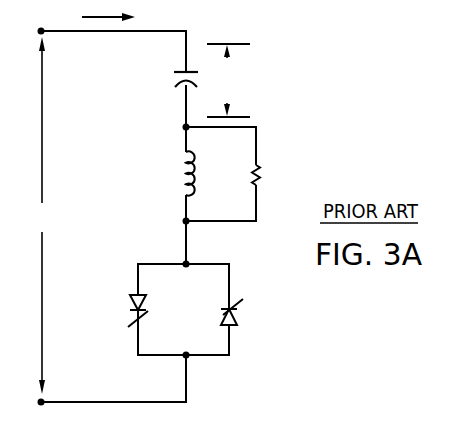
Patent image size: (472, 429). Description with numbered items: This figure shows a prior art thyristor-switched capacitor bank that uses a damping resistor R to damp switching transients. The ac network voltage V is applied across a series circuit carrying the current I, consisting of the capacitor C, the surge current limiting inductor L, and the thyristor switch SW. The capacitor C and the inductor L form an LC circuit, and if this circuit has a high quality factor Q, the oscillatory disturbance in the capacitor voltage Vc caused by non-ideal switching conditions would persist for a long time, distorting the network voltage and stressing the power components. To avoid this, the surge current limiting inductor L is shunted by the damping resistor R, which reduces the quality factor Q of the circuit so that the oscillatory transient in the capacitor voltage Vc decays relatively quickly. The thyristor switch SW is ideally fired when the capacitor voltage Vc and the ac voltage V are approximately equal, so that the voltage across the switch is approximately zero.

The capacitor C is at (173, 75).
The surge current limiting inductor L is at (185, 168).
The damping resistor R is at (249, 169).
The thyristor switch SW is at (173, 316).
The ac network voltage V is at (42, 215).
The capacitor voltage Vc is at (228, 80).
The current I is at (108, 10).
The quality factor Q is at (92, 217).